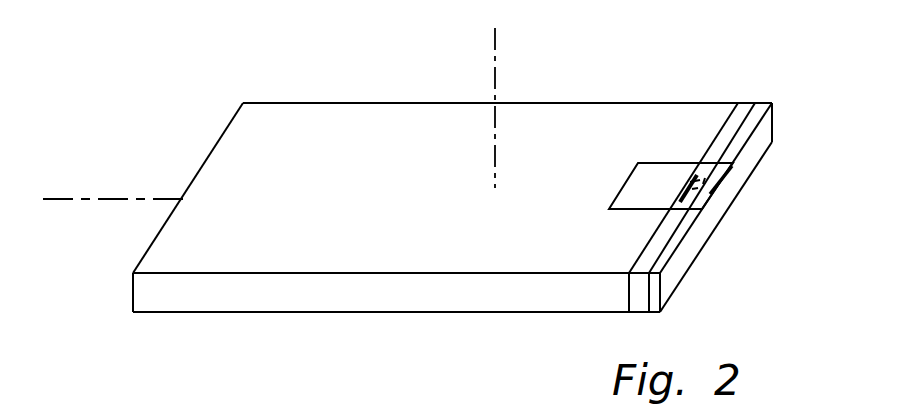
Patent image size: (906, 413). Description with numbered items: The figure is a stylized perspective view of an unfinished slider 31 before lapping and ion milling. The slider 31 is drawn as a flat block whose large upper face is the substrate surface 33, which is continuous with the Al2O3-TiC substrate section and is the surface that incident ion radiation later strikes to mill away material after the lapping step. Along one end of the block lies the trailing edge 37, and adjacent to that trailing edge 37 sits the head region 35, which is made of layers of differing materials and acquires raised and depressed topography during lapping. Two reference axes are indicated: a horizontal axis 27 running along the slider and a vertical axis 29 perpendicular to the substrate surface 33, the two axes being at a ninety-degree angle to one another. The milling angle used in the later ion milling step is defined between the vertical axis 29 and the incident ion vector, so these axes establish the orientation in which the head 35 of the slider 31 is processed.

The horizontal axis 27 is at (91, 198).
The vertical axis 29 is at (495, 61).
The slider 31 is at (384, 70).
The substrate surface 33 is at (570, 117).
The head region 35 is at (676, 173).
The trailing edge 37 is at (722, 195).